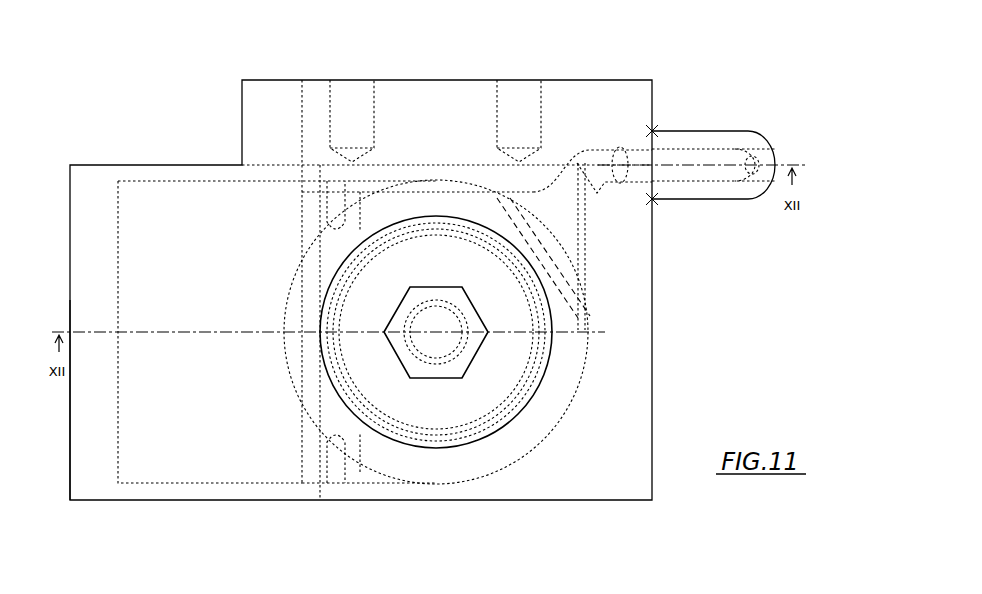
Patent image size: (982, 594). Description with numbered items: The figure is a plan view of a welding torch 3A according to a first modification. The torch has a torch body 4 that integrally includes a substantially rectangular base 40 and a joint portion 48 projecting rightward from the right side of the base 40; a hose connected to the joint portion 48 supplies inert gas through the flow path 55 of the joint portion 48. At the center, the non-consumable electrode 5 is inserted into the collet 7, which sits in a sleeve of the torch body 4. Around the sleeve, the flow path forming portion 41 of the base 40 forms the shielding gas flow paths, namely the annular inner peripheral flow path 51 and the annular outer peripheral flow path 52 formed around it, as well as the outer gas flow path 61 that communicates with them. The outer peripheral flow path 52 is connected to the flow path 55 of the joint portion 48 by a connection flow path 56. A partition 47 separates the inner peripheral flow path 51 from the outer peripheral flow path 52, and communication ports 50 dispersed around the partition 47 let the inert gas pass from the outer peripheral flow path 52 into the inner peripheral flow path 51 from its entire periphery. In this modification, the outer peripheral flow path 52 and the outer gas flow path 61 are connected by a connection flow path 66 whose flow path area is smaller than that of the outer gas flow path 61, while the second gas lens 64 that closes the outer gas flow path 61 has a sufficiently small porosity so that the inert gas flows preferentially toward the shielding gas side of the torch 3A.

The welding torch 3A is at (733, 326).
The torch body 4 is at (716, 412).
The non-consumable electrode 5 is at (435, 287).
The collet 7 is at (456, 287).
The base 40 is at (653, 388).
The flow path forming portion 41 is at (96, 501).
The partition 47 is at (450, 470).
The joint portion 48 is at (716, 129).
The communication port 50 is at (497, 447).
The inner peripheral flow path 51 is at (420, 470).
The outer peripheral flow path 52 is at (527, 443).
The flow path 55 is at (718, 182).
The connection flow path 56 is at (560, 187).
The outer gas flow path 61 is at (422, 456).
The second gas lens 64 is at (148, 505).
The connection flow path 66 is at (378, 212).